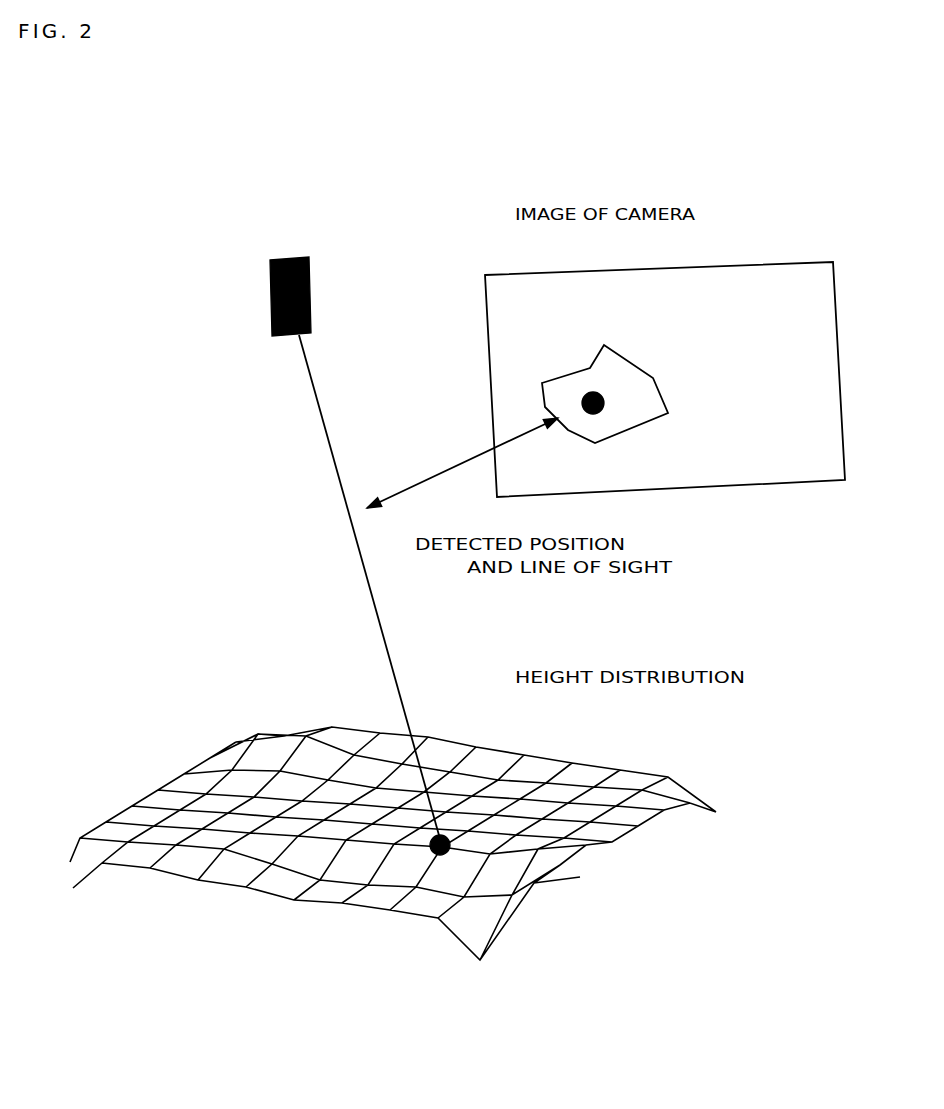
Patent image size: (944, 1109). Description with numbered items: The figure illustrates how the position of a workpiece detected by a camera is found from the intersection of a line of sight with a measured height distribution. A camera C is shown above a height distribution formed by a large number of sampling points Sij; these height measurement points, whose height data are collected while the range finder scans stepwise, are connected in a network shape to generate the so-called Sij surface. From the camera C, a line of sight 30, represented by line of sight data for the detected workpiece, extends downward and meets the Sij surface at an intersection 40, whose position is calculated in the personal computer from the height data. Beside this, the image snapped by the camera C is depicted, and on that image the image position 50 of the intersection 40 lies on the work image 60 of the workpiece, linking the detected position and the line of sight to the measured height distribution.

The camera C is at (310, 247).
The line of sight 30 is at (328, 448).
The intersection 40 is at (463, 838).
The image position 50 is at (608, 390).
The work image 60 is at (623, 430).
The sampling points Sij is at (407, 892).